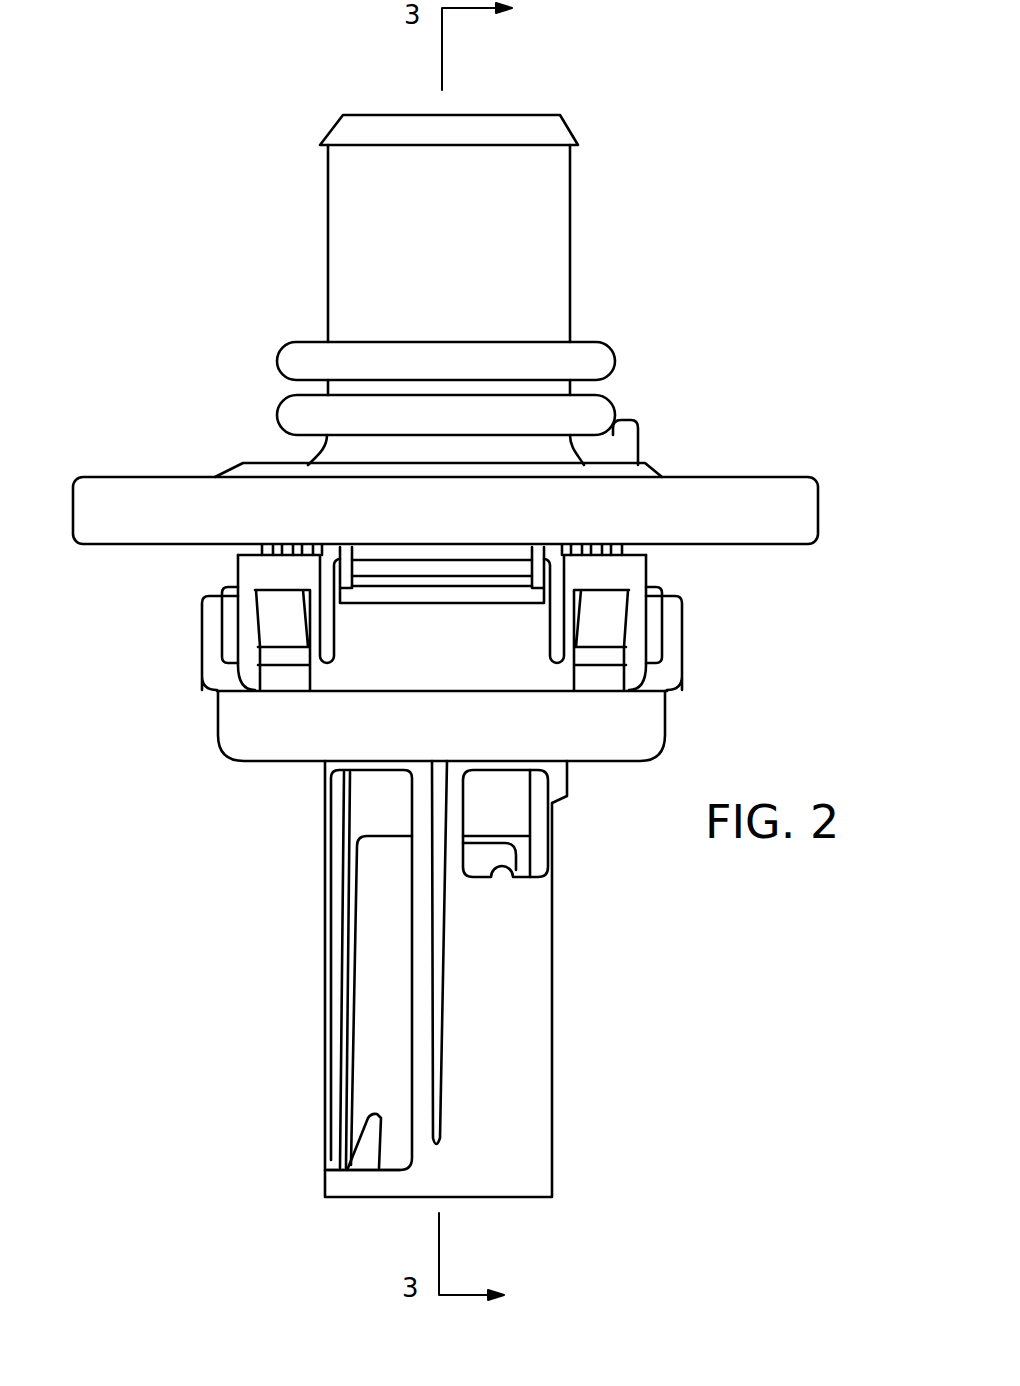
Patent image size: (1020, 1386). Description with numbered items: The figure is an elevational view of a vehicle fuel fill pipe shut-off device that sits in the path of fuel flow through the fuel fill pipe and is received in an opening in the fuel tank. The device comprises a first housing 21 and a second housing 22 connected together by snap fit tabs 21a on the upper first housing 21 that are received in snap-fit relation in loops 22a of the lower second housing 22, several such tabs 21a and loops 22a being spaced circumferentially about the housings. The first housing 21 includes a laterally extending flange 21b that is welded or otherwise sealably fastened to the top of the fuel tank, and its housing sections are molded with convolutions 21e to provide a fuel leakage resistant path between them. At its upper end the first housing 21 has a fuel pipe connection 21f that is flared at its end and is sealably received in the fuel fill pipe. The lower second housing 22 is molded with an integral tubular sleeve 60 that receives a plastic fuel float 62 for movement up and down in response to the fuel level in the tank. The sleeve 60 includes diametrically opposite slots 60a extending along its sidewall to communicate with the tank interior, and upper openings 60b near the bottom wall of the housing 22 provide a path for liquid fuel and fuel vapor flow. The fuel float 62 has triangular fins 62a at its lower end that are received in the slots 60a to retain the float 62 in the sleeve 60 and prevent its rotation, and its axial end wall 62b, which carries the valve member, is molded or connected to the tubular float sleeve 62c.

The first housing 21 is at (445, 403).
The snap fit tabs 21a is at (613, 623).
The laterally extending flange 21b is at (148, 468).
The convolutions 21e is at (598, 362).
The fuel pipe connection 21f is at (557, 192).
The second housing 22 is at (520, 912).
The loops 22a is at (653, 572).
The tubular sleeve 60 is at (444, 985).
The slots 60a is at (410, 1147).
The upper openings 60b is at (487, 878).
The fuel float 62 is at (316, 970).
The triangular fins 62a is at (370, 1117).
The axial end wall 62b is at (375, 836).
The tubular float sleeve 62c is at (360, 988).